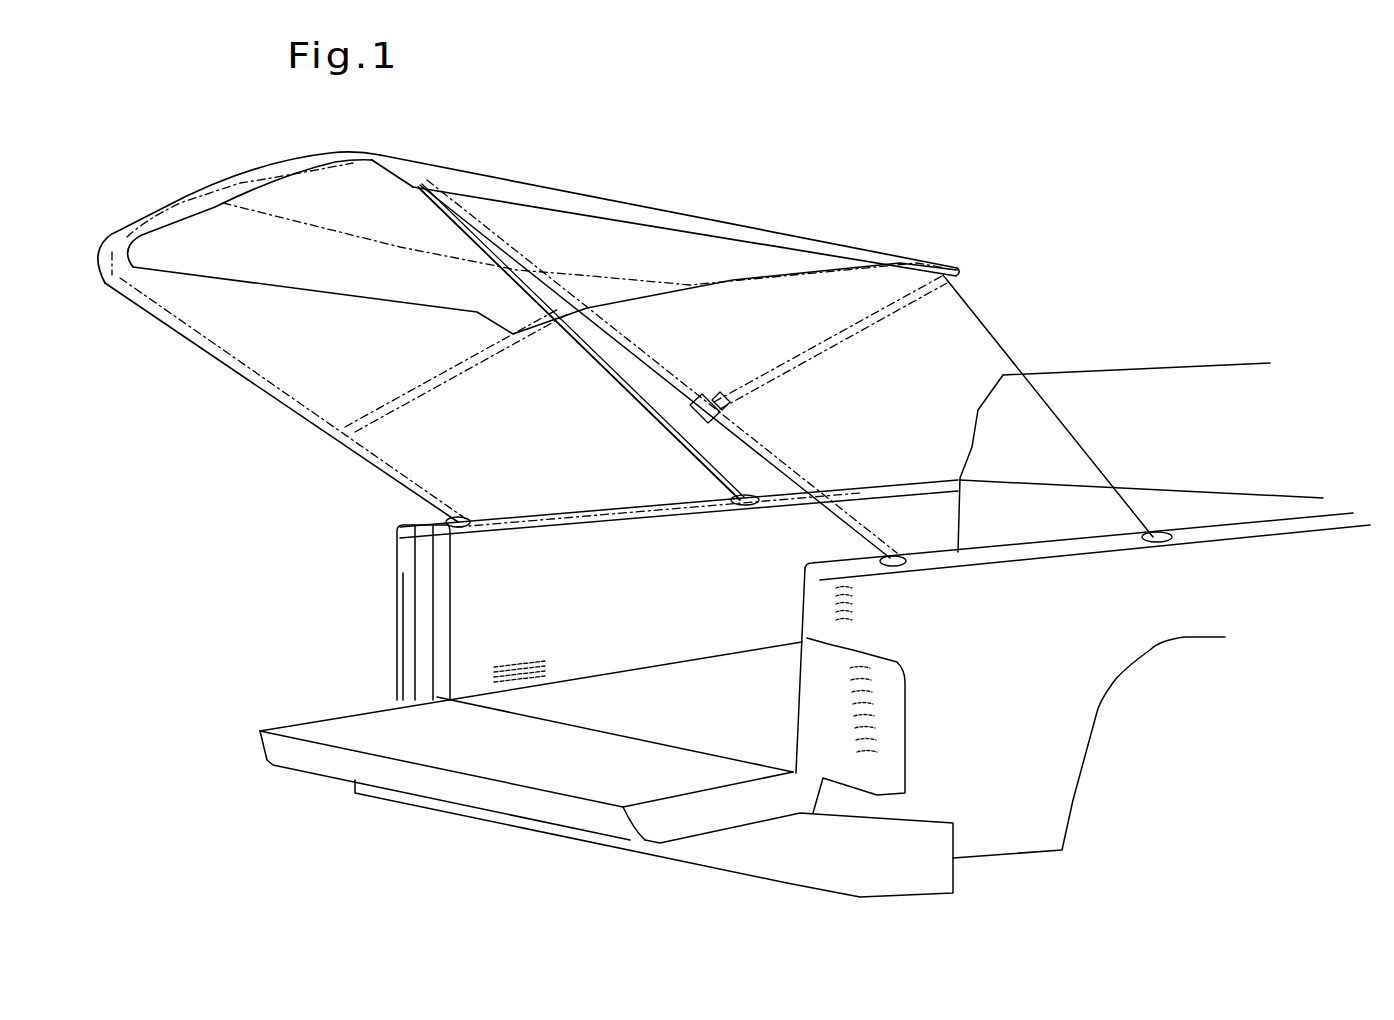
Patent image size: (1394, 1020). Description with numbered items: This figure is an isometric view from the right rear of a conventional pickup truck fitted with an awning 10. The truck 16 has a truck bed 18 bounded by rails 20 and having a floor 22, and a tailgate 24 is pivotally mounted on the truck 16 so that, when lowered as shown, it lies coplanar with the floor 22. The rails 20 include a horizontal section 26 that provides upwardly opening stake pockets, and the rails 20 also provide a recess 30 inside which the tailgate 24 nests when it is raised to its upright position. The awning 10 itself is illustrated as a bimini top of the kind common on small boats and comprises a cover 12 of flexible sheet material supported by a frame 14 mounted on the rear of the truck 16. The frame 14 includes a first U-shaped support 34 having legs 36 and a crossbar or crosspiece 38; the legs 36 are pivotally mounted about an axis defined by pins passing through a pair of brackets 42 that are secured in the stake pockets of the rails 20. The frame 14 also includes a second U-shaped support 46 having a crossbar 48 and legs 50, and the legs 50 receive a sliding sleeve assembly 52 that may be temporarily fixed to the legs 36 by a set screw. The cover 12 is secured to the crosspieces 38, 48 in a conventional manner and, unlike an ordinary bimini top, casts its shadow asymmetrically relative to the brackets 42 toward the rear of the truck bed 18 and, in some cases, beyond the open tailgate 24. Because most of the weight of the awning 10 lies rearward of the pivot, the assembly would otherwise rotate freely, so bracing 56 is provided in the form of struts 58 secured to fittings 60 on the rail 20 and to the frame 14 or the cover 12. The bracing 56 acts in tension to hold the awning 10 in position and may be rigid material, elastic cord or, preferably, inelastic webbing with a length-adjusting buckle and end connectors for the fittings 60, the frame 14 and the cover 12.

The awning 10 is at (868, 140).
The cover 12 is at (548, 180).
The frame 14 is at (873, 337).
The truck 16 is at (1230, 343).
The truck bed 18 is at (625, 485).
The rails 20 is at (848, 482).
The floor 22 is at (742, 715).
The tailgate 24 is at (355, 700).
The horizontal section 26 is at (1290, 528).
The recess 30 is at (427, 570).
The U-shaped support 34 is at (220, 368).
The legs 36 is at (612, 310).
The crossbar or crosspiece 38 is at (195, 190).
The brackets 42 is at (900, 555).
The U-shaped support 46 is at (827, 332).
The crossbar 48 is at (690, 282).
The legs 50 is at (415, 380).
The sliding sleeve assembly 52 is at (710, 385).
The bracing 56 is at (993, 300).
The struts 58 is at (610, 368).
The fittings 60 is at (1172, 519).